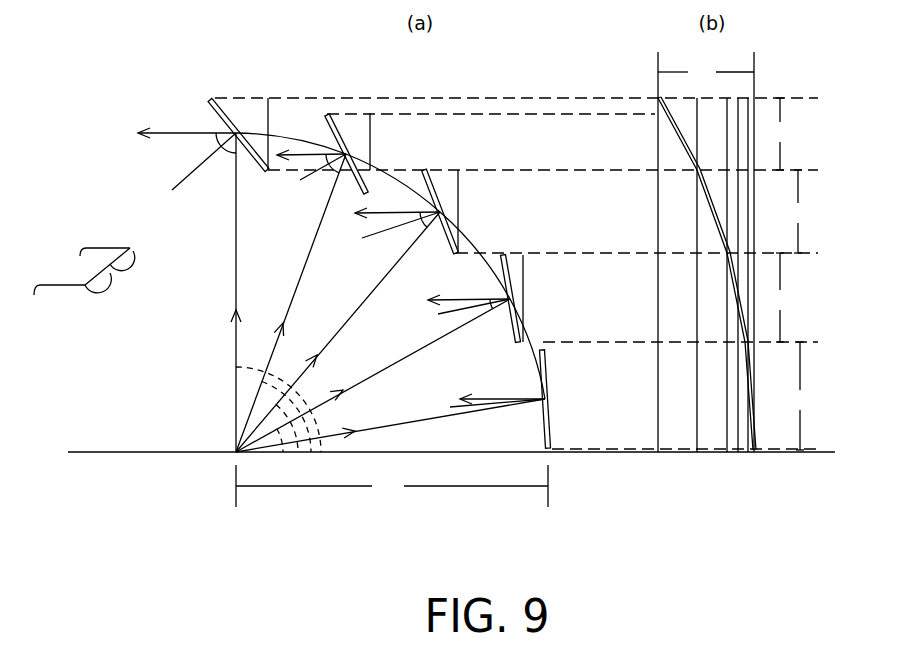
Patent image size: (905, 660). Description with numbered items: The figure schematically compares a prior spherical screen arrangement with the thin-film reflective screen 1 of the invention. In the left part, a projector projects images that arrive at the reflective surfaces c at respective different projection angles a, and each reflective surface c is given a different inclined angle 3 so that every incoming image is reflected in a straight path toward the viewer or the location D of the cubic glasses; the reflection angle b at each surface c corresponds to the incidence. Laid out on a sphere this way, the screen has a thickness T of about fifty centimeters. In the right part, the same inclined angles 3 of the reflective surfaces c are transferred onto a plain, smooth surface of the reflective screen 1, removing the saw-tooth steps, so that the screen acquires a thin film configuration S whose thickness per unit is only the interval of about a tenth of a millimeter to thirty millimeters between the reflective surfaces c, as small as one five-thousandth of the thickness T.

The inclined angle 3 is at (262, 140).
The reflective screen 1 is at (656, 101).
The 3D glasses D is at (135, 250).
The thickness of prior spherical screen T is at (392, 486).
The thin film configuration S is at (706, 72).
The projection angle a is at (358, 291).
The angle of reflection b is at (358, 270).
The reflective surface c is at (166, 109).